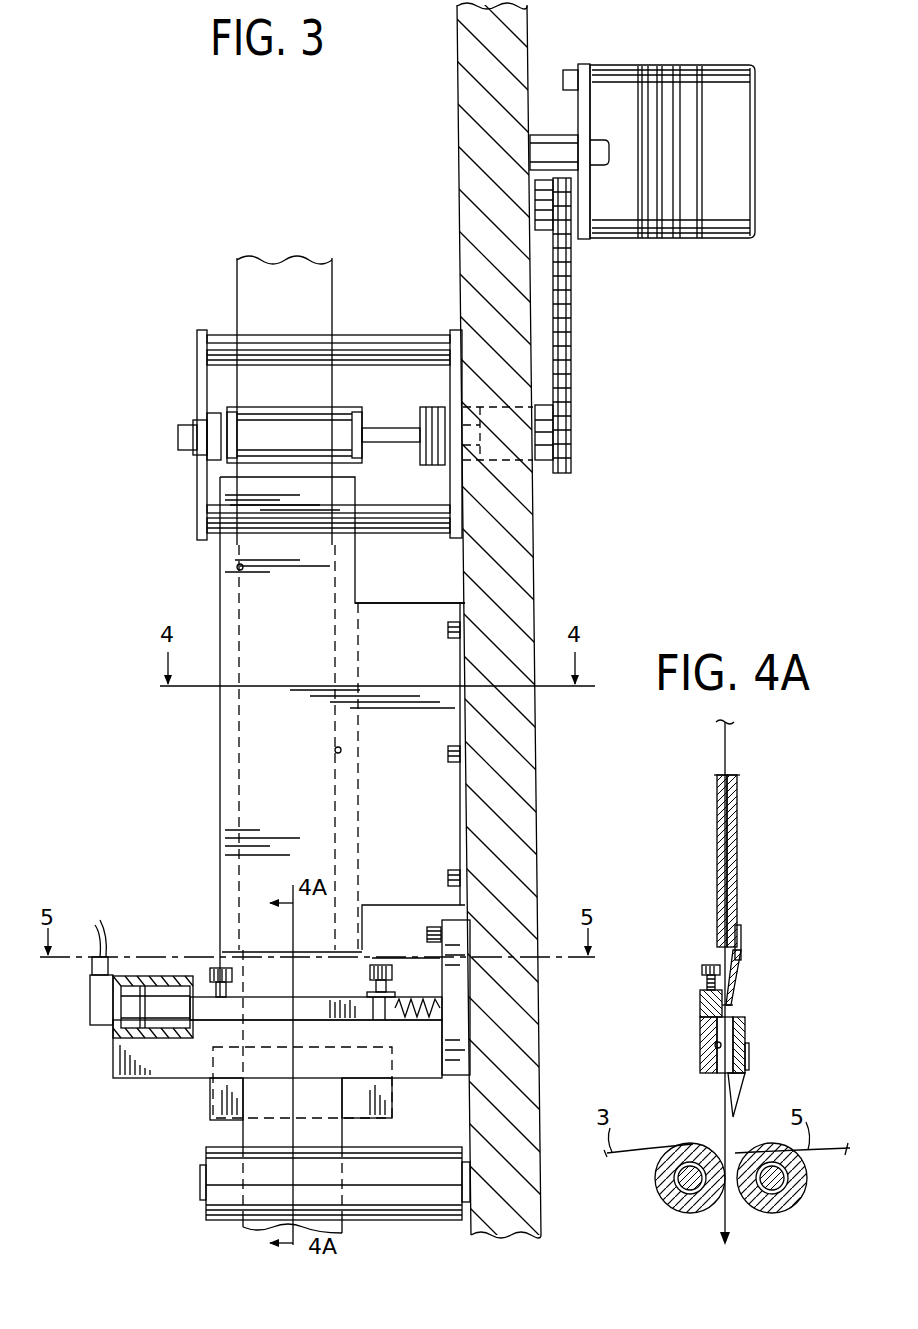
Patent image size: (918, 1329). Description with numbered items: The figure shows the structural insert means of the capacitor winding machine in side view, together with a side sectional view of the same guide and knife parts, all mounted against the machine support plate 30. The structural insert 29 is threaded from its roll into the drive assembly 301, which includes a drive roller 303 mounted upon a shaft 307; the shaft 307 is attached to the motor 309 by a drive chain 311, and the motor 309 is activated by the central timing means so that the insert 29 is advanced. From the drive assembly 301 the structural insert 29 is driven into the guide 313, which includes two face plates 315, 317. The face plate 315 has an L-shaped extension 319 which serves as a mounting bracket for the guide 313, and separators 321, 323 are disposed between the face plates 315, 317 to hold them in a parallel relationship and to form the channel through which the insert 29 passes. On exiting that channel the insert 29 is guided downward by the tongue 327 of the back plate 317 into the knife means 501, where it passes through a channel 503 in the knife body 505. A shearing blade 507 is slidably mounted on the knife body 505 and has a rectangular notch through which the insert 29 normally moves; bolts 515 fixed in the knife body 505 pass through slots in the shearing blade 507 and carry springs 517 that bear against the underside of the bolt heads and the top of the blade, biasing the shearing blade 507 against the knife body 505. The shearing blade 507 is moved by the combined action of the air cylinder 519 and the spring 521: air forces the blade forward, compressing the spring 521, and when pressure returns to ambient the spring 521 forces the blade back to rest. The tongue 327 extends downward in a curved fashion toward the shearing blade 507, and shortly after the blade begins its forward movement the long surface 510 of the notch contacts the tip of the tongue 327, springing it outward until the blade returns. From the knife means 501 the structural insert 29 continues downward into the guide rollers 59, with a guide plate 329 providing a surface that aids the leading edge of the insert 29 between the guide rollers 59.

In FIG. 3, the structural insert 29 is at (312, 317).
In FIG. 4A, the structural insert 29 is at (723, 742).
In FIG. 3, the machine support plate 30 is at (523, 573).
In FIG. 3, the guide rollers 59 is at (410, 1195).
In FIG. 4A, the guide rollers 59 is at (678, 1185).
In FIG. 3, the drive assembly 301 is at (176, 376).
In FIG. 3, the drive roller 303 is at (294, 435).
In FIG. 3, the shaft 307 is at (402, 432).
In FIG. 3, the motor 309 is at (724, 238).
In FIG. 3, the drive chain 311 is at (565, 340).
In FIG. 3, the guide 313 is at (210, 729).
In FIG. 3, the face plate 315 is at (250, 766).
In FIG. 4A, the face plate 315 is at (717, 832).
In FIG. 4A, the face plate 317 is at (737, 835).
In FIG. 3, the L-shaped extension 319 is at (414, 620).
In FIG. 3, the separator 321 is at (236, 567).
In FIG. 3, the separator 323 is at (342, 751).
In FIG. 3, the tongue 327 is at (365, 955).
In FIG. 4A, the tongue 327 is at (738, 972).
In FIG. 3, the guide plate 329 is at (215, 1098).
In FIG. 4A, the guide plate 329 is at (742, 1100).
In FIG. 3, the knife means 501 is at (314, 1028).
In FIG. 3, the channel 503 is at (350, 1110).
In FIG. 4A, the channel 503 is at (715, 1045).
In FIG. 3, the knife body 505 is at (432, 1055).
In FIG. 4A, the knife body 505 is at (700, 1062).
In FIG. 3, the shearing blade 507 is at (286, 1000).
In FIG. 4A, the shearing blade 507 is at (700, 1004).
In FIG. 4A, the long surface 510 is at (728, 1010).
In FIG. 3, the bolts 515 is at (224, 966).
In FIG. 4A, the bolts 515 is at (708, 965).
In FIG. 3, the springs 517 is at (388, 990).
In FIG. 4A, the springs 517 is at (707, 984).
In FIG. 3, the air cylinder 519 is at (160, 998).
In FIG. 3, the spring 521 is at (444, 1000).